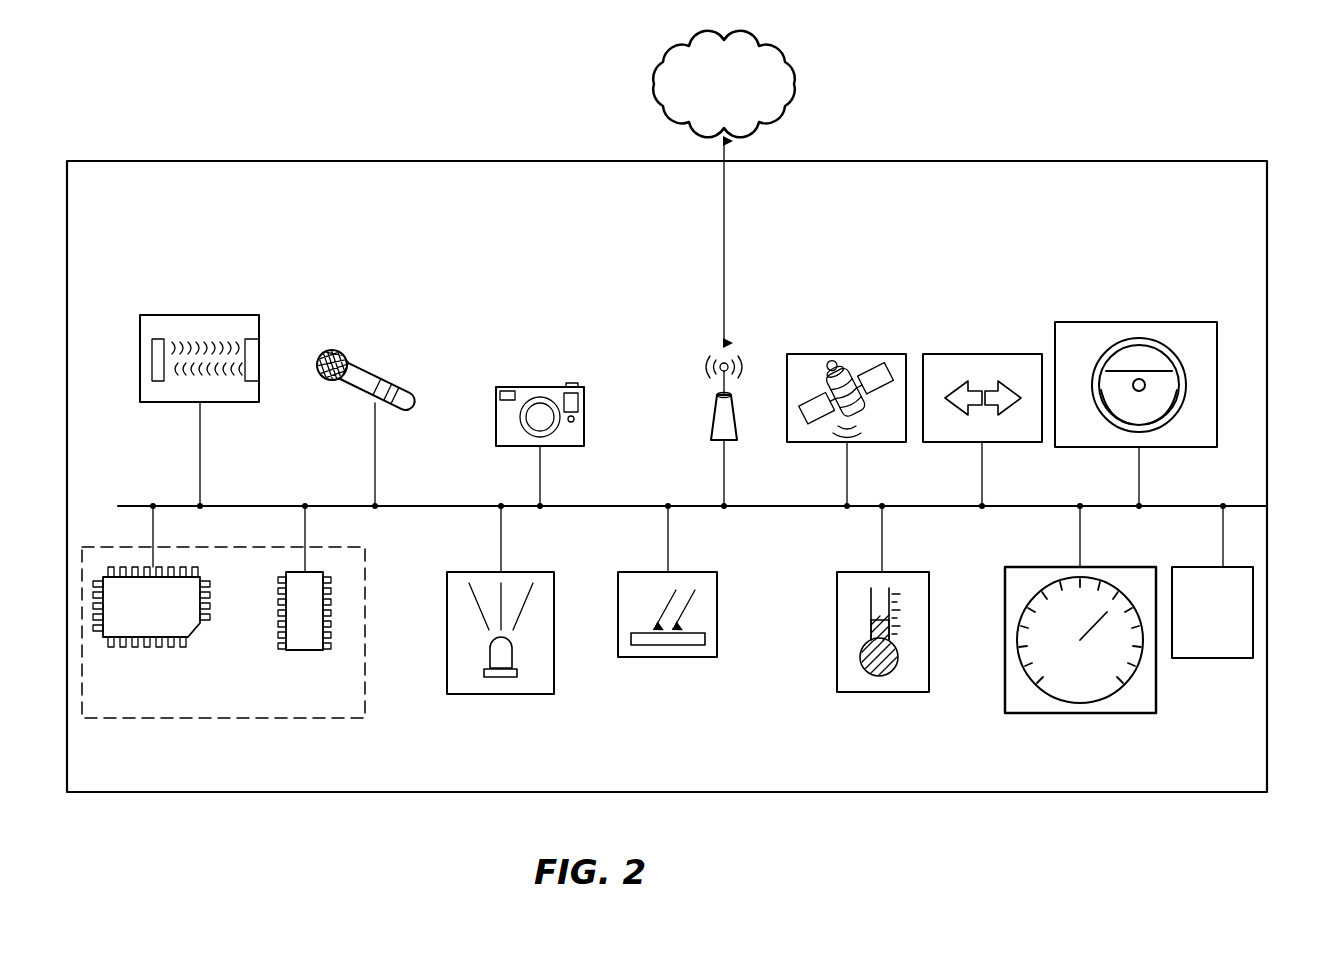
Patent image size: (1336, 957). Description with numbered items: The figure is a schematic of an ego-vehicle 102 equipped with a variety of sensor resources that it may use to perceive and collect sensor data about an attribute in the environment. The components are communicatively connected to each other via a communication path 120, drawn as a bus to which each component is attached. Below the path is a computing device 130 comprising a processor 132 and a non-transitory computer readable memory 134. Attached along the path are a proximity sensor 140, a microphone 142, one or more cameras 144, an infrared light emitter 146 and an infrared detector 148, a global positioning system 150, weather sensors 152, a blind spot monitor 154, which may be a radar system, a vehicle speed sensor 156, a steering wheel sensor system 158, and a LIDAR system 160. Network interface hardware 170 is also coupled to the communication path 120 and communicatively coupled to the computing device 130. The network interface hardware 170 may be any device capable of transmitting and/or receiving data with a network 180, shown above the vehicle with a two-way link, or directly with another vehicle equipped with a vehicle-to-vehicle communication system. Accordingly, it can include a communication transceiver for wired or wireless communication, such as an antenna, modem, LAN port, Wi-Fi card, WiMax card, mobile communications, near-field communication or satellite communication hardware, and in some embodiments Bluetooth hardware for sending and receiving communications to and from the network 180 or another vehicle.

The ego-vehicle 102 is at (1267, 283).
The communication path 120 is at (133, 504).
The computing device 130 is at (365, 698).
The processor 132 is at (192, 636).
The non-transitory computer readable memory 134 is at (303, 652).
The proximity sensor 140 is at (200, 315).
The microphone 142 is at (377, 372).
The cameras 144 is at (540, 387).
The infrared light emitter 146 is at (499, 695).
The infrared detector 148 is at (667, 658).
The global positioning system (GPS) 150 is at (847, 354).
The weather sensors 152 is at (882, 693).
The blind spot monitor 154 is at (982, 354).
The vehicle speed sensor 156 is at (1082, 713).
The steering wheel sensor system 158 is at (1139, 322).
The LIDAR system 160 is at (1228, 660).
The network interface hardware 170 is at (712, 398).
The network 180 is at (652, 86).